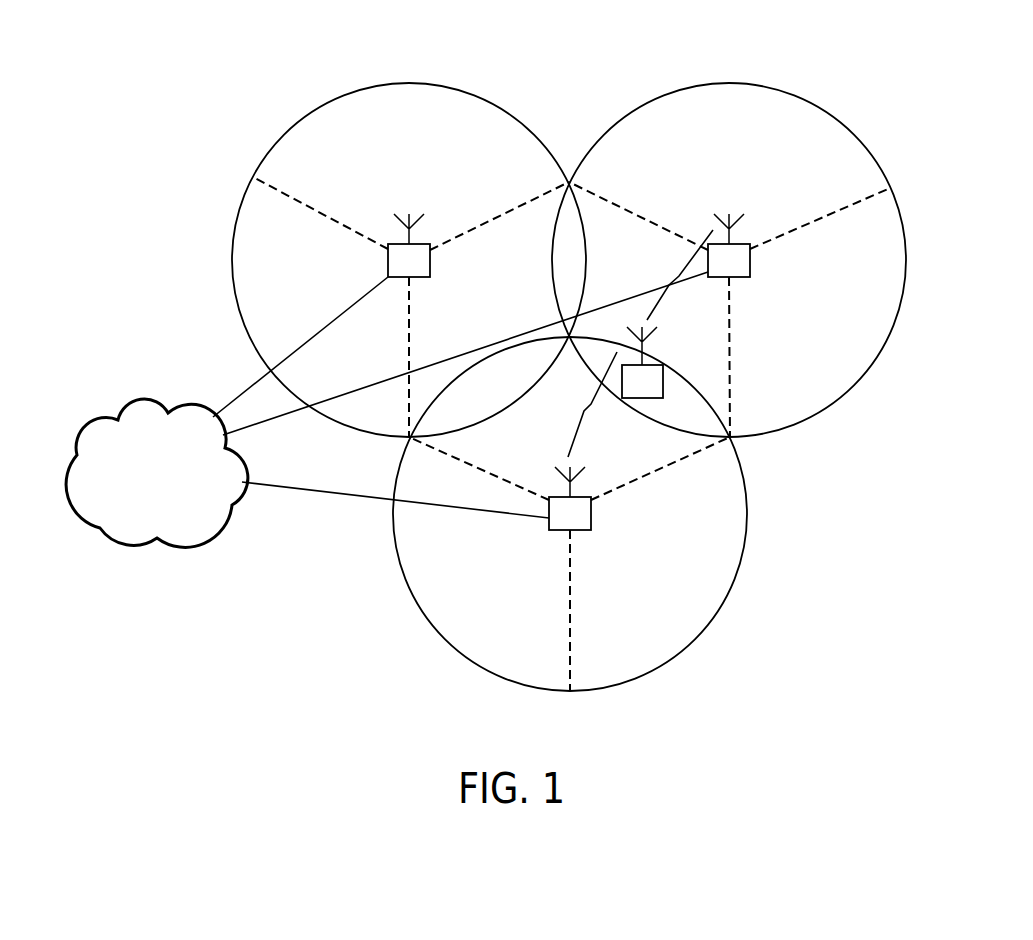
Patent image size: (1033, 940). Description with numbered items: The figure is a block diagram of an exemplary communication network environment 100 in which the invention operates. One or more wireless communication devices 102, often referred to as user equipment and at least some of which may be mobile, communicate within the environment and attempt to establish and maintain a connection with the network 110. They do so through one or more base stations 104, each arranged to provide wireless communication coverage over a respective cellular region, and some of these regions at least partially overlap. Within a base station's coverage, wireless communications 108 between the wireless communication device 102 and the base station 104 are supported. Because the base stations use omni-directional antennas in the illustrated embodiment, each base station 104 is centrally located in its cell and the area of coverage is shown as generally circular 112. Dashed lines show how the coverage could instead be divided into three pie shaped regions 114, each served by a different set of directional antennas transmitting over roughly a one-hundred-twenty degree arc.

The communication network environment 100 is at (811, 42).
The wireless communication device 102 is at (642, 398).
The base station 104 is at (430, 260).
The wireless communications 108 is at (658, 302).
The network 110 is at (132, 545).
The circular area of coverage 112 is at (487, 100).
The pie shaped region 114 is at (348, 110).